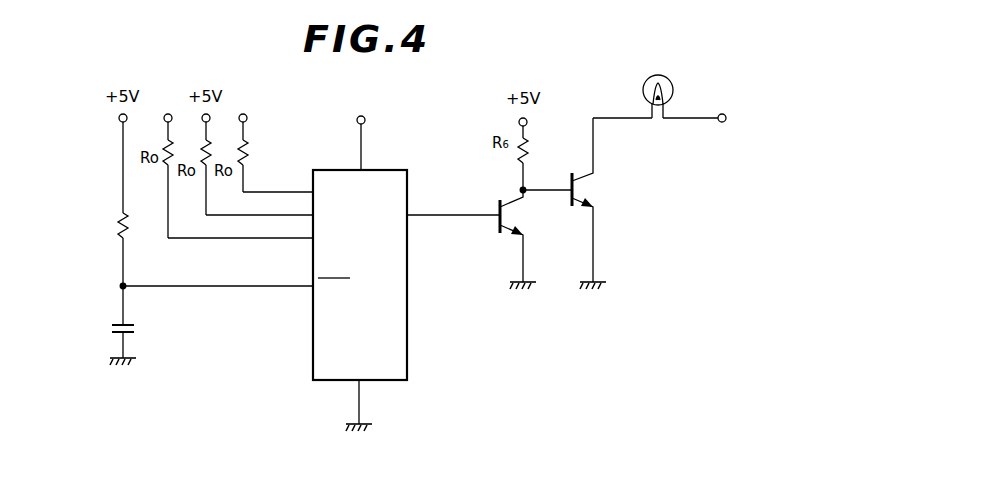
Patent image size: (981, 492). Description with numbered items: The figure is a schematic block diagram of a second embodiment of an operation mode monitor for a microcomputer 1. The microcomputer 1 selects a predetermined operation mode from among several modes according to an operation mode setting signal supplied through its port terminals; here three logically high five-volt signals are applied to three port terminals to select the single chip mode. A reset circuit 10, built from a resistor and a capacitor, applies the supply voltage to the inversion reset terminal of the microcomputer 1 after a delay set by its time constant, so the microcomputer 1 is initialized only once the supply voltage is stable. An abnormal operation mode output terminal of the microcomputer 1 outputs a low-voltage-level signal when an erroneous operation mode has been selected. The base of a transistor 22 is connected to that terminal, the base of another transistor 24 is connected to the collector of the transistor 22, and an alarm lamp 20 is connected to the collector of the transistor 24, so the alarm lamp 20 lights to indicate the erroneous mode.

The microcomputer 1 is at (391, 168).
The reset circuit 10 is at (136, 299).
The alarm lamp 20 is at (672, 82).
The transistor 22 is at (512, 200).
The transistor 24 is at (588, 176).